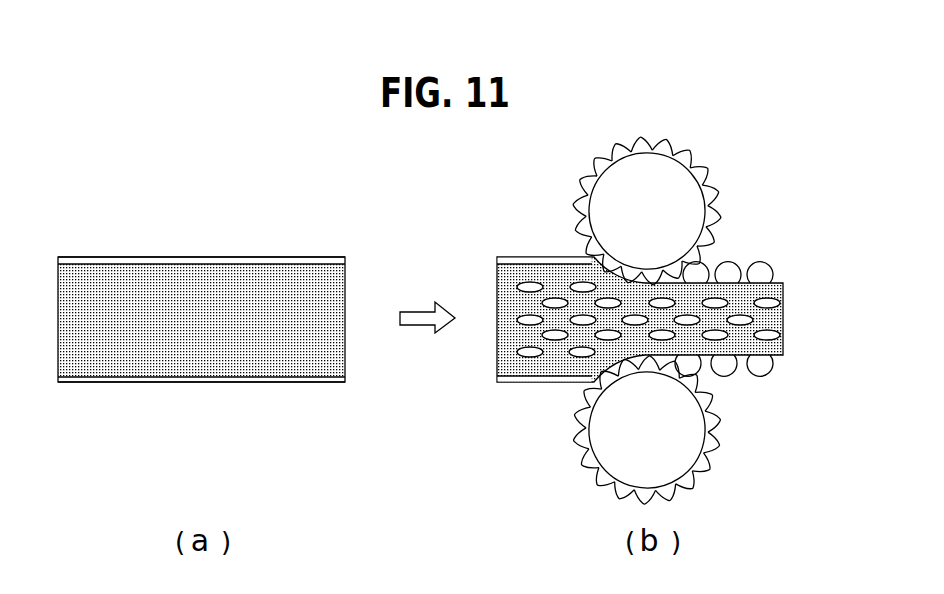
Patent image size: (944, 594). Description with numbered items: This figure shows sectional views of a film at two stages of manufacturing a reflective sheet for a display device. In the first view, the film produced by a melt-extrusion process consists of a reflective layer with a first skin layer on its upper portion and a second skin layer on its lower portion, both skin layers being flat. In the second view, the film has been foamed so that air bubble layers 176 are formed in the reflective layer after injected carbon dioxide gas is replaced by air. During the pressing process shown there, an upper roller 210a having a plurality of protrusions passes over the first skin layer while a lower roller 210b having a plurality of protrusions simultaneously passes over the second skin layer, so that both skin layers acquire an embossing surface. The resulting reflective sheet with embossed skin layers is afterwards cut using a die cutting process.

The air bubble layers 176 is at (772, 302).
The upper roller 210a is at (680, 197).
The lower roller 210b is at (660, 438).